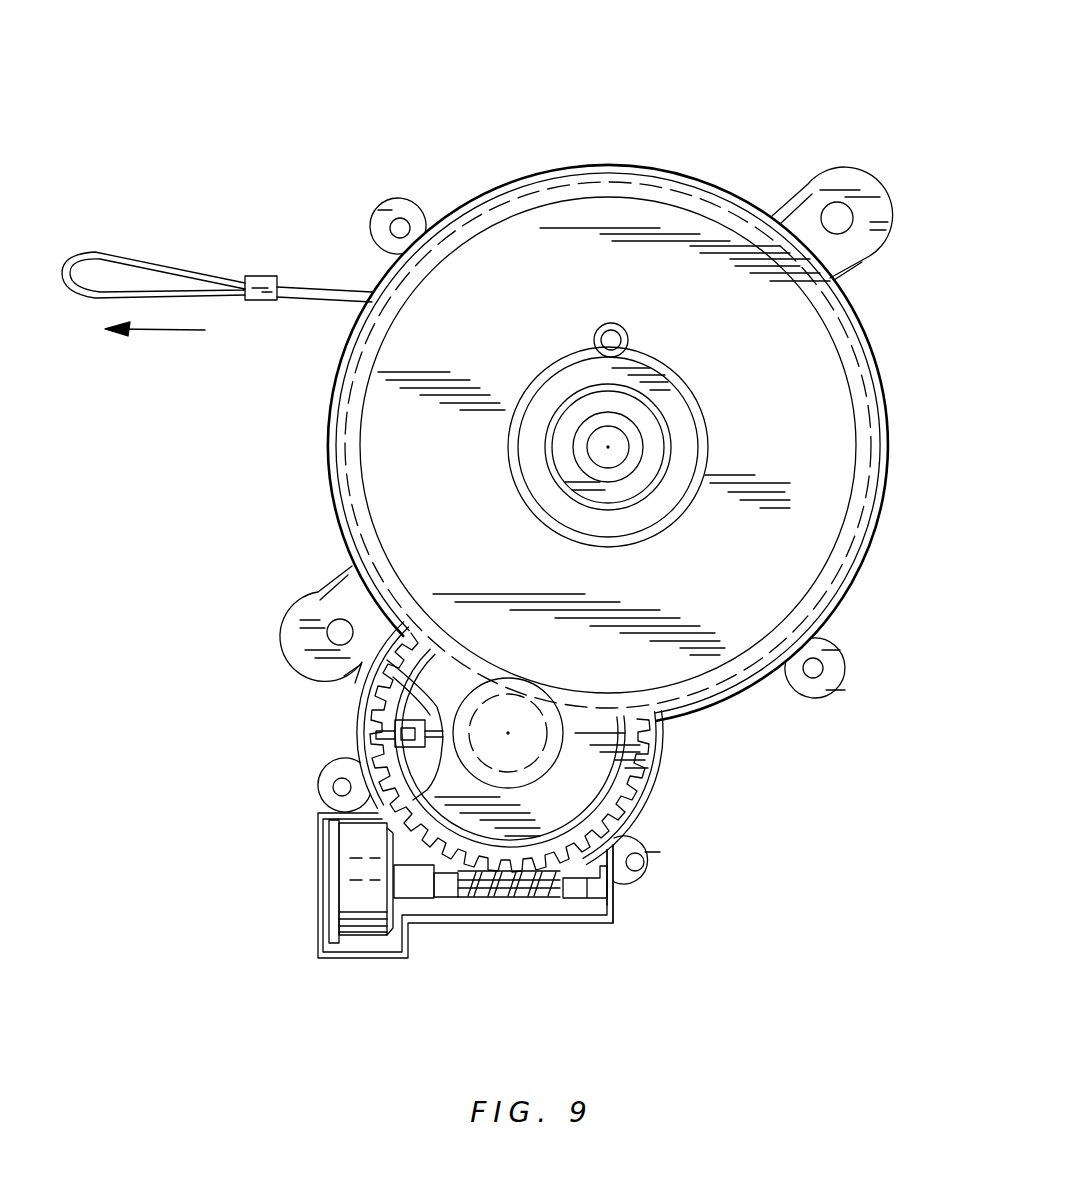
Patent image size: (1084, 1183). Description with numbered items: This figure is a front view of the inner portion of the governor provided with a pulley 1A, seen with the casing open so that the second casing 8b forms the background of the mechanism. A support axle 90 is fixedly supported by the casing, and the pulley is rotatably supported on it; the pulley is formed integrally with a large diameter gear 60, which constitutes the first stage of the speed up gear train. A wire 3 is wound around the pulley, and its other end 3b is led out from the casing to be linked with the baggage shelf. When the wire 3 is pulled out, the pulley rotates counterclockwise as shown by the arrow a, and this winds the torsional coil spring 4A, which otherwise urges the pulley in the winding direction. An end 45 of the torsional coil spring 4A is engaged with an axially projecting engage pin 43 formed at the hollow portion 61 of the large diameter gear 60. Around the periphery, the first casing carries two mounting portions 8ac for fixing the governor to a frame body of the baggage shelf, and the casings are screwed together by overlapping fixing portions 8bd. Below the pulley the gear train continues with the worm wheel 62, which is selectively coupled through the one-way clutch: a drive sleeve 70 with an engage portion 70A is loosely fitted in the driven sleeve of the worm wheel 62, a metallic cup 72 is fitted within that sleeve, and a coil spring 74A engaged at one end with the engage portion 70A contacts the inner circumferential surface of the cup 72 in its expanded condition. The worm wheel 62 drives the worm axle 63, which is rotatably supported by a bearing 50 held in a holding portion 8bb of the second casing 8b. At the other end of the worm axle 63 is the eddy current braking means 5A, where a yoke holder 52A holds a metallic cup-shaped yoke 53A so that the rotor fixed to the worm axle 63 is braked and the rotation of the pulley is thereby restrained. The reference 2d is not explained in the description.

The pulley 1A is at (573, 118).
The second casing 8b is at (858, 598).
The large diameter gear 60 is at (550, 445).
The drive gear wheel 61 is at (506, 468).
The torsional coil spring 4A is at (690, 490).
The shaft bearing ring 2d is at (672, 440).
The support axle 90 is at (619, 460).
The end of the torsional coil spring 45 is at (597, 330).
The engage pin 43 is at (627, 336).
The mounting portions 8ac is at (820, 172).
The fixing portions 8bd is at (410, 205).
The wire 3 is at (303, 285).
The other end of the wire 3b is at (135, 258).
The arrow a is at (155, 358).
The worm wheel 62 is at (651, 787).
The drive sleeve 70 is at (622, 727).
The engage portion 70A is at (407, 727).
The coil spring 74A is at (397, 733).
The metallic cup 72 is at (376, 742).
The eddy current braking means 5A is at (440, 933).
The yoke holder 52A is at (330, 889).
The yoke 53A is at (365, 925).
The worm axle 63 is at (535, 892).
The bearing 50 is at (588, 898).
The holding portion 8bb is at (608, 903).